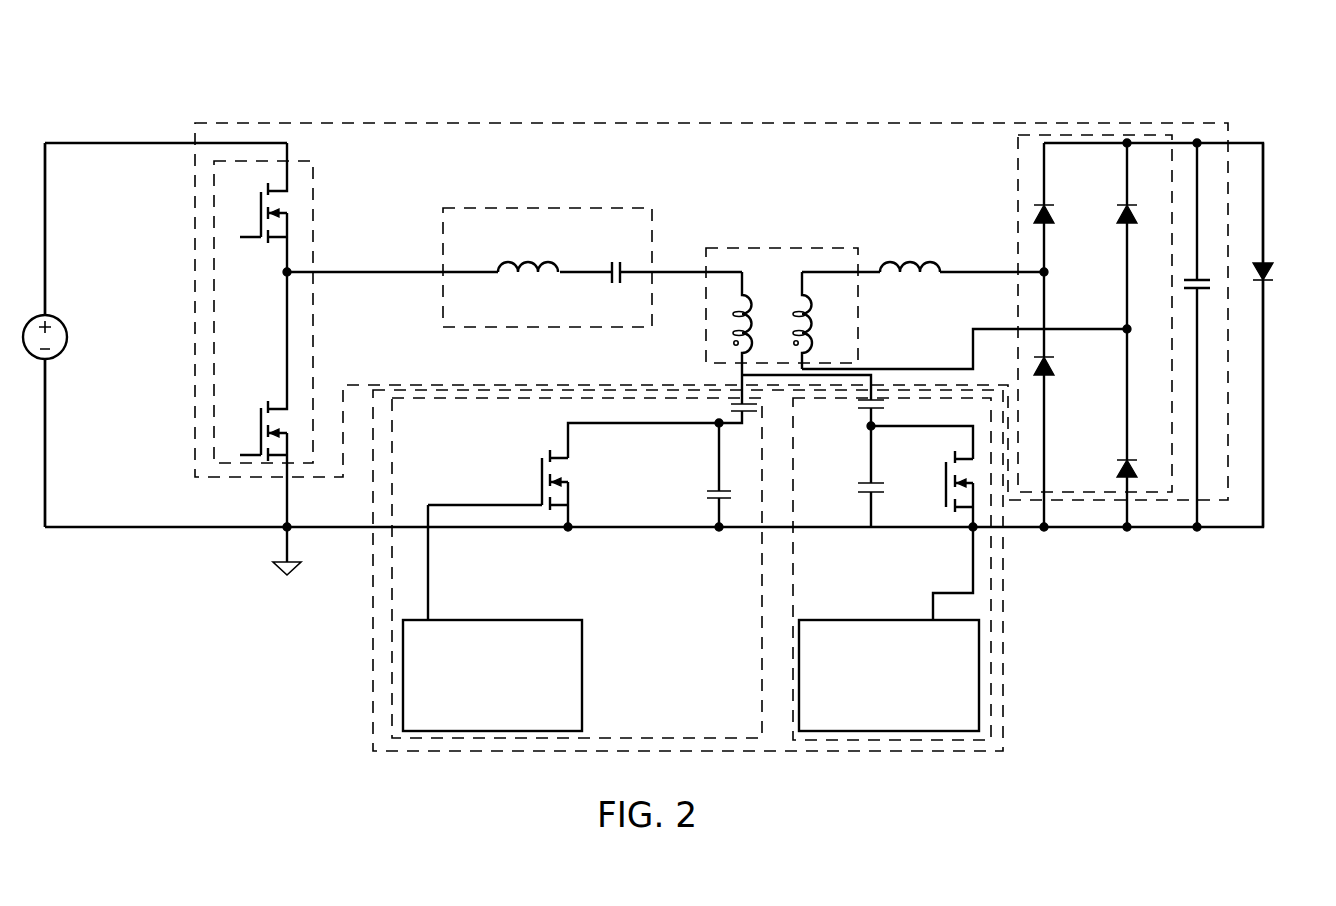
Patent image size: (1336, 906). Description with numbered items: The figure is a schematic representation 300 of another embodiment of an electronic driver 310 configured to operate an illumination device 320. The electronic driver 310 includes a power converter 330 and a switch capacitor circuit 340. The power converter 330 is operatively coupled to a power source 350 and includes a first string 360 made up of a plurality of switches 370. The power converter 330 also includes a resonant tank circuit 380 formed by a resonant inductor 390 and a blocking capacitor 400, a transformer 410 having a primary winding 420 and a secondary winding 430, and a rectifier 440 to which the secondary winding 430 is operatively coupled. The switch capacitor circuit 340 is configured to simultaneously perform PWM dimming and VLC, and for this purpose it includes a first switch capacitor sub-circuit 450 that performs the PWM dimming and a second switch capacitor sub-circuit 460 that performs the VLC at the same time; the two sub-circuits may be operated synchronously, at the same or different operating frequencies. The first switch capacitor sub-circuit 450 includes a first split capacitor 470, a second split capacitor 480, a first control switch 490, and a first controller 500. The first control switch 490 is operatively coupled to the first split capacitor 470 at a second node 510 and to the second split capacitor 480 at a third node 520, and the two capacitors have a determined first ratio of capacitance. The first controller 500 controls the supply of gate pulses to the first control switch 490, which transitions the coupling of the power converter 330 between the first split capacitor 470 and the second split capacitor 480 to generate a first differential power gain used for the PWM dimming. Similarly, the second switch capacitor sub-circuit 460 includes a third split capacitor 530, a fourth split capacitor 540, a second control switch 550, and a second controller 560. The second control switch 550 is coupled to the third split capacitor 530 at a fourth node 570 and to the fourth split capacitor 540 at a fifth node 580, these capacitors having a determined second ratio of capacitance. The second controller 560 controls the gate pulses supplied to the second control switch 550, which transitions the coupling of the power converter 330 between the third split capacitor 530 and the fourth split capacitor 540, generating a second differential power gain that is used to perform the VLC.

The schematic representation 300 is at (843, 45).
The electronic driver 310 is at (160, 106).
The illumination device 320 is at (1267, 265).
The power converter 330 is at (322, 122).
The switch capacitor circuit 340 is at (375, 625).
The power source 350 is at (58, 318).
The first string 360 is at (287, 333).
The switches 370 is at (312, 162).
The resonant tank circuit 380 is at (547, 245).
The resonant inductor 390 is at (515, 262).
The blocking capacitor 400 is at (610, 281).
The transformer 410 is at (788, 289).
The primary winding 420 is at (748, 298).
The secondary winding 430 is at (814, 318).
The rectifier 440 is at (1018, 157).
The first switch capacitor sub-circuit 450 is at (531, 556).
The second switch capacitor sub-circuit 460 is at (937, 569).
The first split capacitor 470 is at (731, 405).
The second split capacitor 480 is at (708, 488).
The first control switch 490 is at (542, 477).
The first controller 500 is at (540, 618).
The second node 510 is at (716, 426).
The third node 520 is at (569, 531).
The third split capacitor 530 is at (878, 412).
The fourth split capacitor 540 is at (878, 482).
The second control switch 550 is at (944, 473).
The second controller 560 is at (888, 618).
The fourth node 570 is at (870, 428).
The fifth node 580 is at (971, 533).